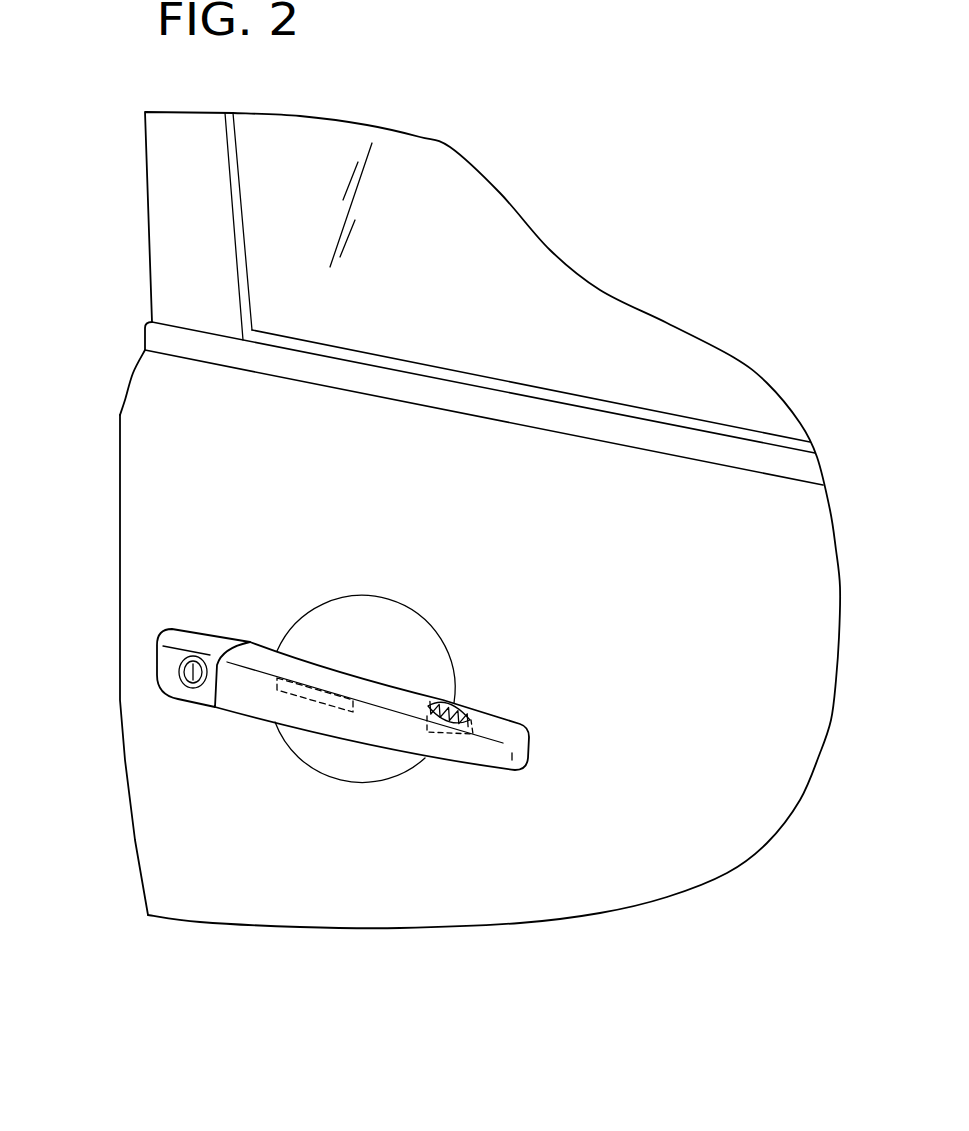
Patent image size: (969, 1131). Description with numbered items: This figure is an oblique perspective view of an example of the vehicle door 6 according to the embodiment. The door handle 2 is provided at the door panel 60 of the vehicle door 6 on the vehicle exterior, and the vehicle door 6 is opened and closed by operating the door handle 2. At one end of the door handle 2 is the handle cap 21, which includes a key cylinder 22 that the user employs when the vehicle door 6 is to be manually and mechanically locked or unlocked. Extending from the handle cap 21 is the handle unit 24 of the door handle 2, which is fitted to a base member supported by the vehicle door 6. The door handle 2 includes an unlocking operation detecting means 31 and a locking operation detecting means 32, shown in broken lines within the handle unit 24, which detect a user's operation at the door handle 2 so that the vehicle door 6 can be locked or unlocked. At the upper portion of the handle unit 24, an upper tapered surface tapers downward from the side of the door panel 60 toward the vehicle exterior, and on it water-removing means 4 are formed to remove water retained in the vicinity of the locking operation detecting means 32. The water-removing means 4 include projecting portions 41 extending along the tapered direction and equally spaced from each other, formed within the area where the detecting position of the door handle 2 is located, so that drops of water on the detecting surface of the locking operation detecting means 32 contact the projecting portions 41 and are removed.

The door handle 2 is at (288, 710).
The water-removing means 4 is at (437, 706).
The vehicle door 6 is at (120, 415).
The handle cap 21 is at (146, 649).
The key cylinder 22 is at (192, 658).
The handle unit 24 is at (372, 747).
The unlocking operation detecting means 31 is at (333, 713).
The locking operation detecting means 32 is at (488, 718).
The projecting portions 41 is at (404, 679).
The door panel 60 is at (165, 802).